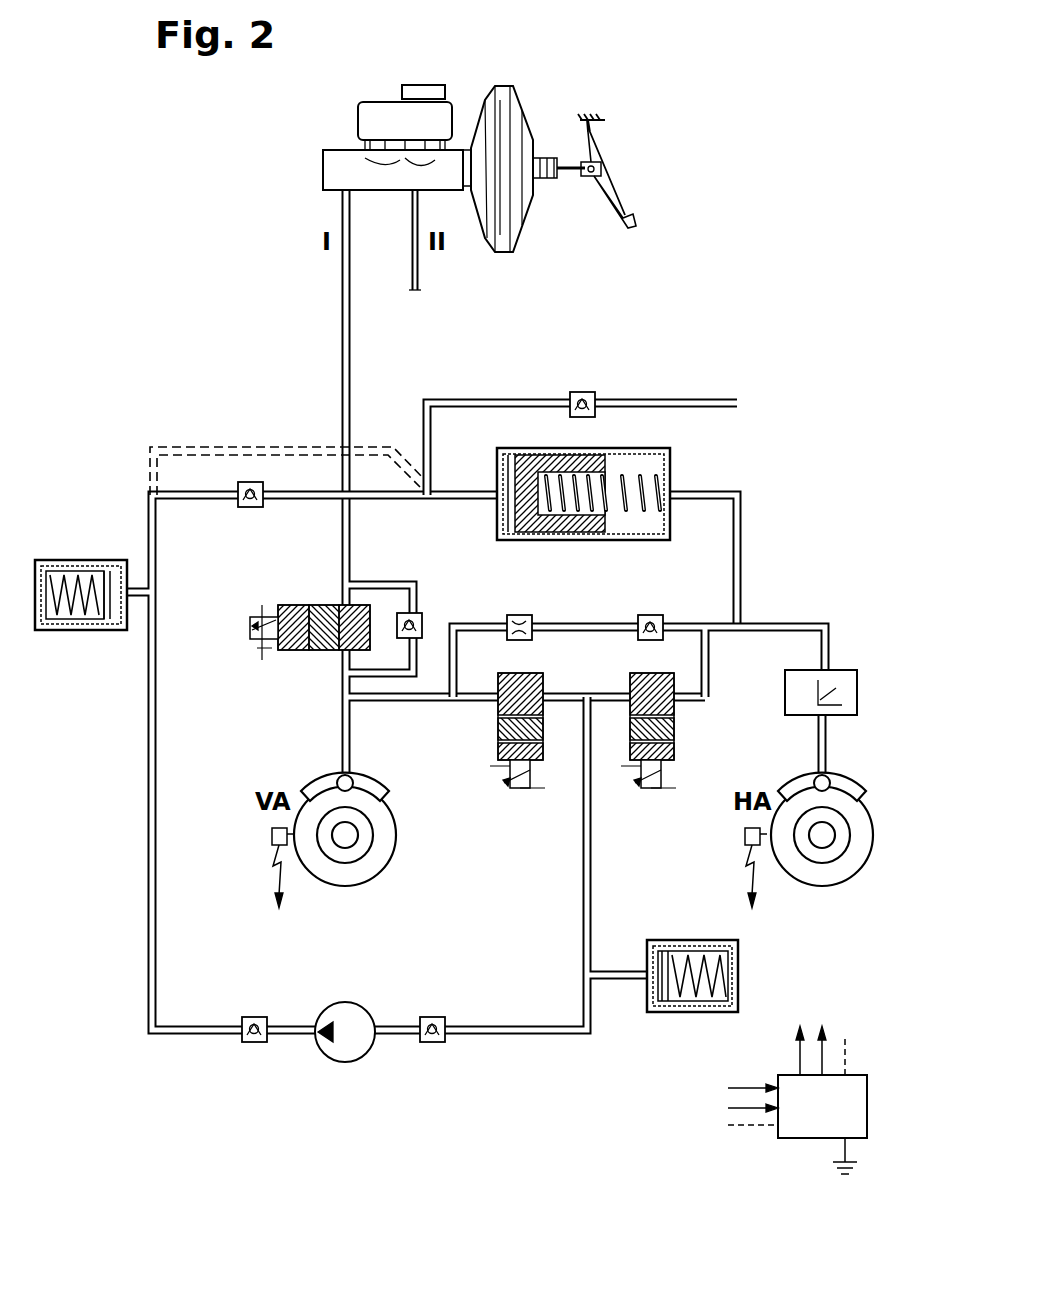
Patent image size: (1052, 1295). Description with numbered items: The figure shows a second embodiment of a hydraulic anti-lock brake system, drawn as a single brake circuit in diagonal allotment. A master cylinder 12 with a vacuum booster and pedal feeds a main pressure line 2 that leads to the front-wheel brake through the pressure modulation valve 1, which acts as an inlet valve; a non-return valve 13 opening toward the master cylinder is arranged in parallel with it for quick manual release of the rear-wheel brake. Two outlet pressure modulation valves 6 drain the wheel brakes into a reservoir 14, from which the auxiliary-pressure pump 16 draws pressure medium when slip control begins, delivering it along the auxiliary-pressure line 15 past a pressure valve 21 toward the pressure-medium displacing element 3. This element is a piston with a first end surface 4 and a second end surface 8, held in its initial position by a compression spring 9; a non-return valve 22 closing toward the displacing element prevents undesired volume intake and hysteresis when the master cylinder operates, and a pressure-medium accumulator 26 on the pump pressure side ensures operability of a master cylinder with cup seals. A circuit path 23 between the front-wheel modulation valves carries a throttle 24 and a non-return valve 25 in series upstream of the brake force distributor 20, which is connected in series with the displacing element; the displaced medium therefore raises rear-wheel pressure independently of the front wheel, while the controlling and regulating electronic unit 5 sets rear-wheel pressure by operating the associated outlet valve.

The pressure modulation valve 1 is at (310, 603).
The main pressure line 2 is at (340, 343).
The pressure-medium displacing element 3 is at (602, 472).
The first end surface 4 is at (517, 533).
The controlling and regulating electronic unit 5 is at (790, 1140).
The pressure modulation valve 6 is at (498, 730).
The second end surface 8 is at (604, 533).
The compression spring 9 is at (648, 533).
The master cylinder 12 is at (315, 145).
The non-return valve 13 is at (582, 390).
The reservoir 14 is at (673, 1013).
The auxiliary-pressure line 15 is at (148, 497).
The auxiliary-pressure pump 16 is at (350, 1052).
The brake force distributor 20 is at (784, 692).
The pressure valve 21 is at (254, 1045).
The non-return valve 22 is at (240, 510).
The circuit path 23 is at (583, 633).
The throttle 24 is at (508, 612).
The non-return valve 25 is at (660, 612).
The pressure-medium accumulator 26 is at (77, 633).